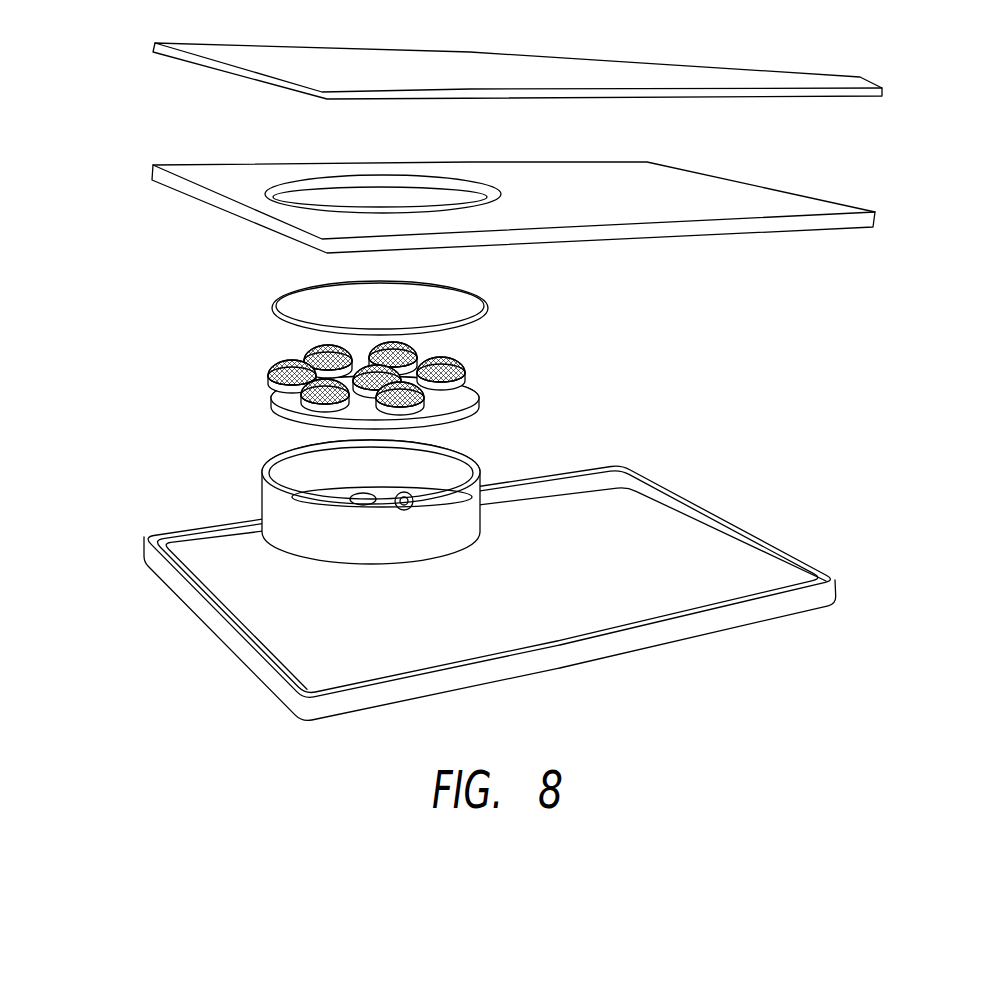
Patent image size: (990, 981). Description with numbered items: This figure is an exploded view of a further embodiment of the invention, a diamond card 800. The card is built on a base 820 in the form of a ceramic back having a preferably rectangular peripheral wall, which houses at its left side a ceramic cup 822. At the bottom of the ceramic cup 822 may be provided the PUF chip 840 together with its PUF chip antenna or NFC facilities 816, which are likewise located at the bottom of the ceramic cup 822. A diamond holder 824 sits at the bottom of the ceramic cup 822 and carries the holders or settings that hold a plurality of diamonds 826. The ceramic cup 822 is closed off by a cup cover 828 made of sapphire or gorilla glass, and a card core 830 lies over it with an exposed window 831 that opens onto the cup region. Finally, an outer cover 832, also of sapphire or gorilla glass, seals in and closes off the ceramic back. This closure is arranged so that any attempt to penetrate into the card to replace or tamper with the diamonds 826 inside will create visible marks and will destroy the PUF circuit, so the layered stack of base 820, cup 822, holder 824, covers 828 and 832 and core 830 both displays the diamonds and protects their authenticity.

The diamond card 800 is at (553, 381).
The PUF chip antenna or NFC facilities 816 is at (352, 496).
The base 820 is at (834, 574).
The ceramic cup 822 is at (363, 486).
The diamond holder 824 is at (478, 425).
The diamonds 826 is at (460, 368).
The cup cover 828 is at (490, 305).
The card core 830 is at (529, 194).
The exposed window 831 is at (340, 195).
The outer cover 832 is at (860, 77).
The PUF chip 840 is at (277, 503).